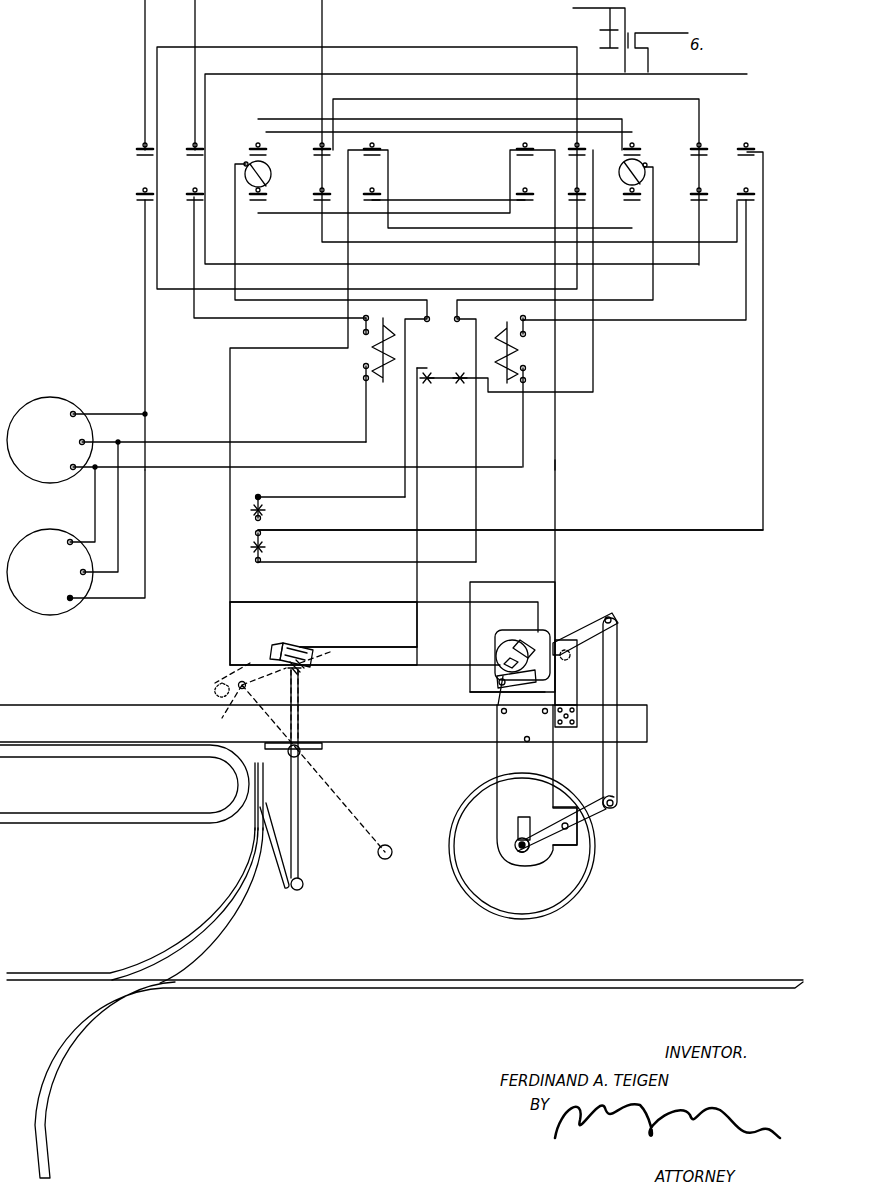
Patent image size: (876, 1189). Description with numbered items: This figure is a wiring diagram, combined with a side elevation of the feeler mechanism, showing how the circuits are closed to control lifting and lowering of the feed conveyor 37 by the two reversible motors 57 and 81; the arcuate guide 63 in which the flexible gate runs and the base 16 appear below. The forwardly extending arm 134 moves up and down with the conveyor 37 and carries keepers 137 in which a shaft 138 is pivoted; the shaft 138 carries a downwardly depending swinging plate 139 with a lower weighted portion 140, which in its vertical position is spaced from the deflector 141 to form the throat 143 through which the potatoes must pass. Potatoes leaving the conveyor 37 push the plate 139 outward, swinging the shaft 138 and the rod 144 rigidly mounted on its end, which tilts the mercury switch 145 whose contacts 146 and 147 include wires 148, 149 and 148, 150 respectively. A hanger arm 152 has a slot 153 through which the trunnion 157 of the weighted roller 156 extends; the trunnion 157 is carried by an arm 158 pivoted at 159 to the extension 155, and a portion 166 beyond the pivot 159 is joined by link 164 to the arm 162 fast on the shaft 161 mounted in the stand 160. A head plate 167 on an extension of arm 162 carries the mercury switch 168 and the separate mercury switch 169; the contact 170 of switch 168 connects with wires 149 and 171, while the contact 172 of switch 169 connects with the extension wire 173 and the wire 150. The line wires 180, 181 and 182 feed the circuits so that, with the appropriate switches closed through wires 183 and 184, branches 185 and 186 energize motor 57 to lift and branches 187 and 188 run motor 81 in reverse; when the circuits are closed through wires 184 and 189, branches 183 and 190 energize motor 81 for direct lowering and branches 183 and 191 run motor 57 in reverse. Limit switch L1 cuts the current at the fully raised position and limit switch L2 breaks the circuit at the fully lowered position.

The base platform 16 is at (410, 985).
The feed conveyor 37 is at (95, 748).
The motor 57 is at (45, 398).
The arcuate guide 63 is at (225, 913).
The motor 81 is at (34, 612).
The forwardly extending arm 134 is at (386, 742).
The keeper 137 is at (300, 746).
The shaft 138 is at (255, 740).
The swinging plate 139 is at (297, 848).
The weighted portion 140 is at (298, 890).
The deflector 141 is at (266, 865).
The throat 143 is at (280, 828).
The rod 144 is at (297, 683).
The mercury switch 145 is at (294, 650).
The contact 146 is at (312, 664).
The contact 147 is at (278, 645).
The wire 148 is at (376, 647).
The wire 149 is at (557, 460).
The wire 150 is at (230, 640).
The hanger arm 152 is at (510, 792).
The slot 153 is at (520, 828).
The extension 155 is at (590, 810).
The weighted roller 156 is at (592, 868).
The trunnion 157 is at (521, 850).
The arm 158 is at (535, 850).
The pivot 159 is at (566, 835).
The stand 160 is at (620, 642).
The shaft 161 is at (570, 640).
The arm 162 is at (600, 622).
The link 164 is at (620, 660).
The portion 166 is at (600, 825).
The head plate 167 is at (566, 650).
The mercury switch 168 is at (518, 720).
The mercury switch 169 is at (515, 640).
The contact 170 is at (500, 690).
The wire 171 is at (472, 682).
The contact 172 is at (528, 640).
The extension wire 173 is at (496, 655).
The line wire 180 is at (145, 30).
The line wire 181 is at (195, 24).
The line wire 182 is at (322, 14).
The wire 183 is at (145, 322).
The wire 184 is at (172, 441).
The branch wire 185 is at (100, 414).
The branch wire 186 is at (105, 440).
The branch wire 187 is at (145, 583).
The branch wire 188 is at (118, 528).
The wire 189 is at (203, 468).
The branch wire 190 is at (95, 556).
The branch wire 191 is at (82, 460).
The limit switch L1 is at (262, 520).
The limit switch L2 is at (262, 555).